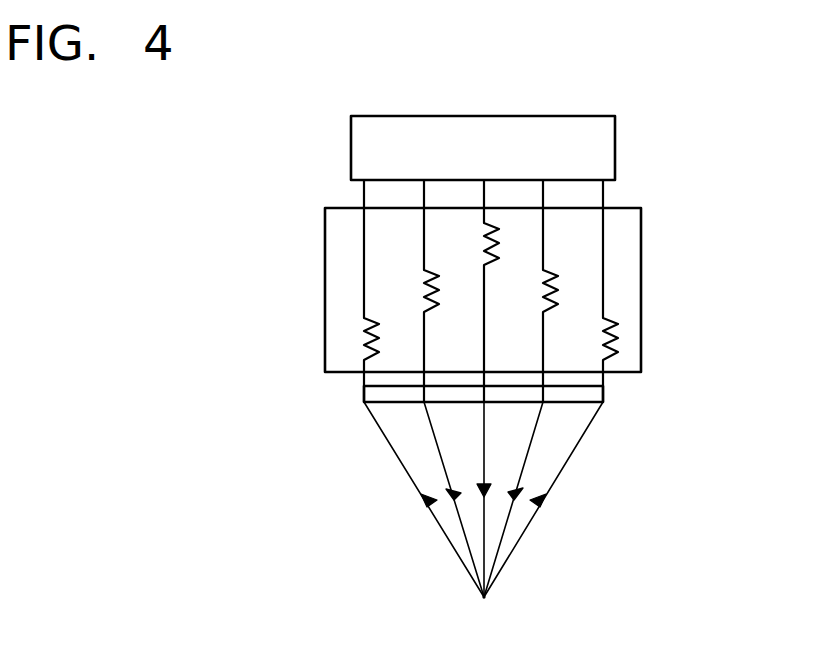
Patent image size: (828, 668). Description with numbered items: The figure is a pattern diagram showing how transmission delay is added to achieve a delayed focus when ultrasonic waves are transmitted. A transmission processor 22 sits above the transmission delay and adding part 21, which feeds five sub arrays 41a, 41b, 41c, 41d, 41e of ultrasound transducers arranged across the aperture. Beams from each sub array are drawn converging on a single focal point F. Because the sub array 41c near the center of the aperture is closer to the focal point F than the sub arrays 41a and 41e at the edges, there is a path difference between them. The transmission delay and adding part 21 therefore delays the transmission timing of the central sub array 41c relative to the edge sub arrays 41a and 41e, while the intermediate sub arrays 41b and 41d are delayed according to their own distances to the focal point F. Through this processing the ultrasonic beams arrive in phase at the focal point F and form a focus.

The transmission processor 22 is at (588, 150).
The transmission delay and adding part 21 is at (325, 265).
The sub array 41a is at (366, 392).
The sub array 41b is at (421, 393).
The sub array 41c is at (484, 393).
The sub array 41d is at (543, 393).
The sub array 41e is at (603, 391).
The focal point F is at (487, 600).